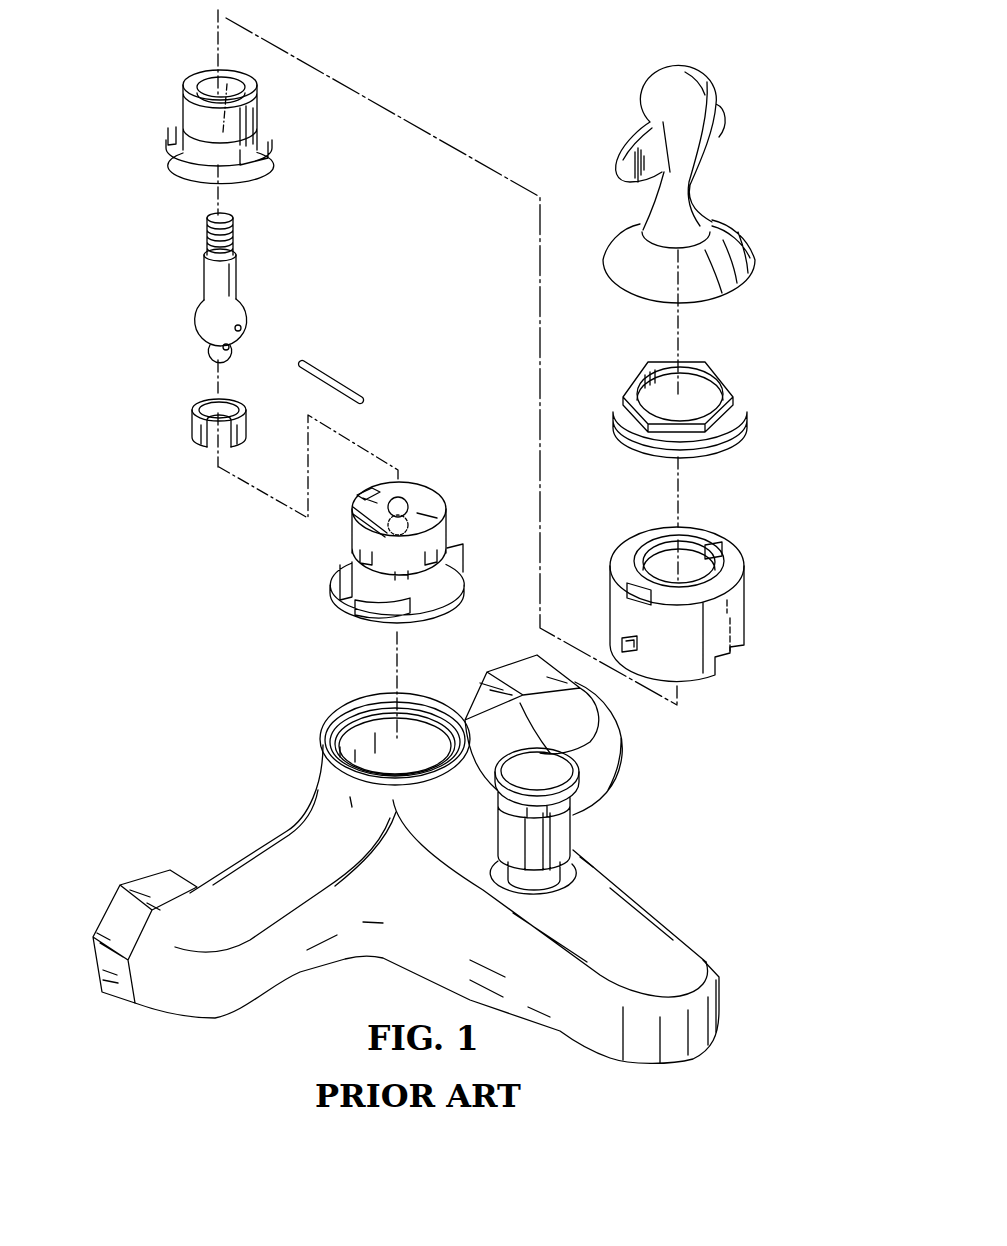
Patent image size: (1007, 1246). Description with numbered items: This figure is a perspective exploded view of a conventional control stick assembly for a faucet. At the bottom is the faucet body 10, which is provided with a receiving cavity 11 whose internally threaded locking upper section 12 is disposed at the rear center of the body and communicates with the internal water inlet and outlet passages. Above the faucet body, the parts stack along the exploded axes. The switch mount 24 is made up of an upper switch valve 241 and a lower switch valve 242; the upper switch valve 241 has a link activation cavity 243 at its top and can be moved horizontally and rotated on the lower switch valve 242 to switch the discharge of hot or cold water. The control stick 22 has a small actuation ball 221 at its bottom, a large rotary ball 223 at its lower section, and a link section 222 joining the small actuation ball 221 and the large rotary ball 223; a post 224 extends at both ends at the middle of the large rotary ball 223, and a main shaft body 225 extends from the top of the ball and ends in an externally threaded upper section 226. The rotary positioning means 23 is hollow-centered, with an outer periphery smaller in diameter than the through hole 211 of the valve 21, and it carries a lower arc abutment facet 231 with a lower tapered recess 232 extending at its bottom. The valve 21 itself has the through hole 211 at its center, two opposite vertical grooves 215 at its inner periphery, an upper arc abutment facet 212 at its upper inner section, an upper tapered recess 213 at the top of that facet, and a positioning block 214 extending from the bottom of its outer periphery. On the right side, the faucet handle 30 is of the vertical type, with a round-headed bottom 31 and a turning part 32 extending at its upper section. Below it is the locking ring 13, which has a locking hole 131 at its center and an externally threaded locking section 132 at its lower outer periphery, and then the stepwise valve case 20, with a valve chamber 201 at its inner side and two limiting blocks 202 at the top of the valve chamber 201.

The faucet body 10 is at (406, 859).
The receiving cavity 11 is at (362, 747).
The internally threaded locking upper section 12 is at (436, 700).
The locking ring 13 is at (706, 408).
The locking hole 131 is at (658, 397).
The externally threaded locking section 132 is at (727, 452).
The valve case 20 is at (657, 609).
The valve chamber 201 is at (663, 560).
The limiting blocks 202 is at (627, 595).
The valve 21 is at (229, 118).
The through hole 211 is at (205, 135).
The upper arc abutment facet 212 is at (223, 132).
The upper tapered recess 213 is at (217, 78).
The positioning block 214 is at (266, 162).
The vertical grooves 215 is at (262, 120).
The control stick 22 is at (248, 308).
The small actuation ball 221 is at (208, 350).
The link section 222 is at (229, 346).
The large rotary ball 223 is at (202, 322).
The post 224 is at (333, 373).
The main shaft body 225 is at (228, 273).
The externally threaded upper section 226 is at (207, 235).
The rotary positioning means 23 is at (224, 431).
The lower arc abutment facet 231 is at (233, 399).
The lower tapered recess 232 is at (213, 440).
The switch mount 24 is at (388, 546).
The upper switch valve 241 is at (430, 548).
The lower switch valve 242 is at (440, 580).
The link activation cavity 243 is at (402, 503).
The faucet handle 30 is at (662, 187).
The round-headed bottom 31 is at (634, 267).
The turning part 32 is at (693, 182).